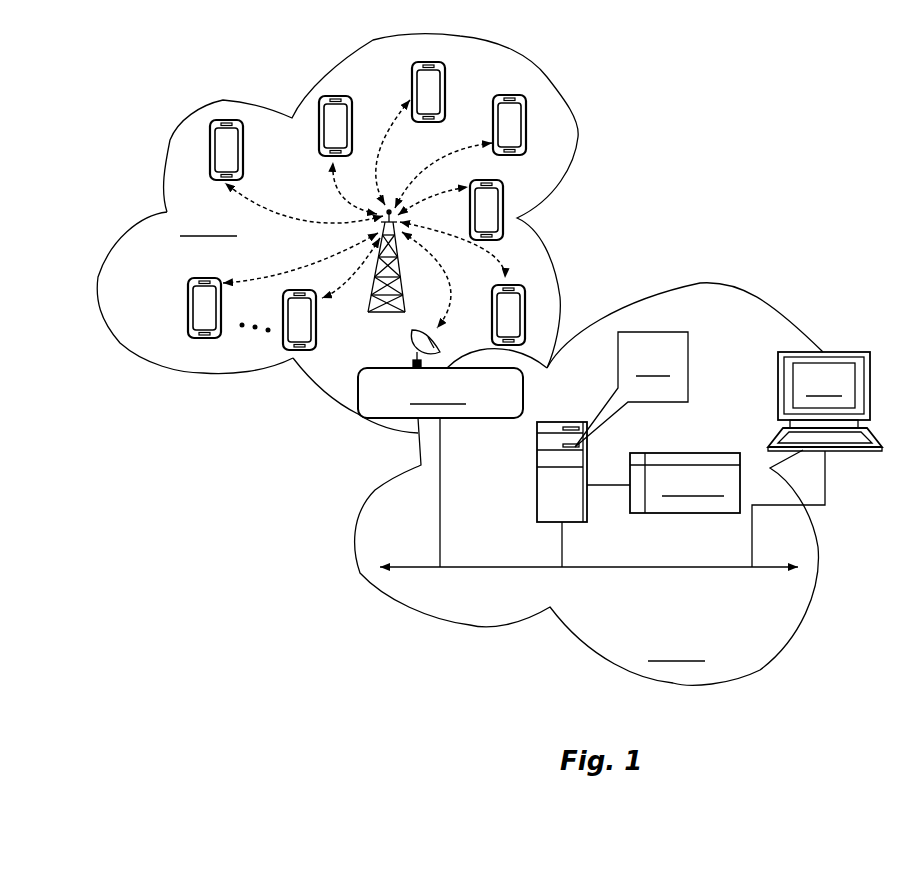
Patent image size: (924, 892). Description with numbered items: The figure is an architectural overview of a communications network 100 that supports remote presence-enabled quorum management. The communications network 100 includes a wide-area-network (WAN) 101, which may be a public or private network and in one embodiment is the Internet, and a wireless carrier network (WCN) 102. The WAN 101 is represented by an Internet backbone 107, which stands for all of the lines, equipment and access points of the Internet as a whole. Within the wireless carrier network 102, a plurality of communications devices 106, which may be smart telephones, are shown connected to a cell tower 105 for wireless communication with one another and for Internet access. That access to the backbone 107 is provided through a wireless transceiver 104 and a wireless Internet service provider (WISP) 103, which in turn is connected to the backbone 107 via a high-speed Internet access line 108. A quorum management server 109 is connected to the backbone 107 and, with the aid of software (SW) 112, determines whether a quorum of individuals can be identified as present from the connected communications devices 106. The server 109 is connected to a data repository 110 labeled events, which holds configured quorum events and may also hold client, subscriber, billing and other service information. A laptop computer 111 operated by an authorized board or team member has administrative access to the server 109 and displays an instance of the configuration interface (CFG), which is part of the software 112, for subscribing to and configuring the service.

The communications network 100 is at (698, 185).
The wide-area-network (WAN) 101 is at (770, 300).
The wireless carrier network (WCN) 102 is at (160, 198).
The wireless Internet service provider (WISP) 103 is at (400, 368).
The wireless transceiver 104 is at (437, 350).
The cell tower 105 is at (380, 215).
The communications devices 106 is at (373, 93).
The Internet backbone 107 is at (687, 567).
The high-speed Internet access line 108 is at (442, 490).
The quorum management server 109 is at (535, 493).
The data repository 110 is at (657, 453).
The laptop computer 111 is at (872, 395).
The software (SW) 112 is at (687, 377).